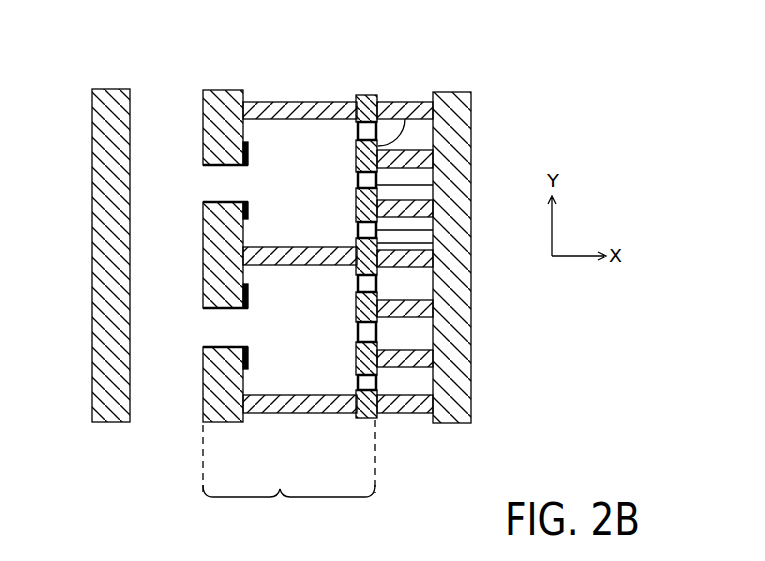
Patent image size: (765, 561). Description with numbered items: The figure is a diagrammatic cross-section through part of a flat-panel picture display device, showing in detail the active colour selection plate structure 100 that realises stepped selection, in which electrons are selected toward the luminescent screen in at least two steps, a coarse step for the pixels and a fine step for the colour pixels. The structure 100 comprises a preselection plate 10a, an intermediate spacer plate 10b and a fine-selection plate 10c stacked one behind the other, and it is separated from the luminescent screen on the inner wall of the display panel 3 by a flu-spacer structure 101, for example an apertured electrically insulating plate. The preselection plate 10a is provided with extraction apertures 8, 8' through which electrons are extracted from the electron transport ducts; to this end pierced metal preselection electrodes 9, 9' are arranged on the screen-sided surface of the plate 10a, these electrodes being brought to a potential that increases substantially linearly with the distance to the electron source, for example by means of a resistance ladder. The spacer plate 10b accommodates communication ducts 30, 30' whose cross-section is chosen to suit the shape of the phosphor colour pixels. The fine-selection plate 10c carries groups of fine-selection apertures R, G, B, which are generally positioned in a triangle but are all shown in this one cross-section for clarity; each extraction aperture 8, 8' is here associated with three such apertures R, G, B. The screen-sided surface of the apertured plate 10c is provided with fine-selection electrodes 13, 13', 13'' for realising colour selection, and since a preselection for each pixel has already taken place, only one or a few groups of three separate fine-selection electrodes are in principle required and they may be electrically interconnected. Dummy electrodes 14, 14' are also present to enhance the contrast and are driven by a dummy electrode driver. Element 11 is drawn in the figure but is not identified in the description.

The display panel 3 is at (433, 122).
The extraction aperture 8 is at (236, 125).
The extraction aperture 8' is at (197, 386).
The preselection electrode 9 is at (258, 185).
The preselection electrode 9' is at (259, 325).
The preselection plate 10a is at (213, 420).
The spacer plate 10b is at (322, 413).
The fine-selection plate 10c is at (363, 412).
The front plate 11 is at (156, 107).
The fine-selection electrode 13 is at (405, 83).
The fine-selection electrode 13' is at (443, 157).
The fine-selection electrode 13'' is at (446, 269).
The dummy electrode 14 is at (351, 170).
The dummy electrode 14' is at (334, 341).
The communication duct 30 is at (300, 102).
The communication duct 30' is at (300, 349).
The active colour selection system 100 is at (289, 477).
The flu-spacer structure 101 is at (417, 417).
The fine-selection aperture B is at (437, 232).
The fine-selection aperture G is at (433, 188).
The fine-selection aperture R is at (388, 100).